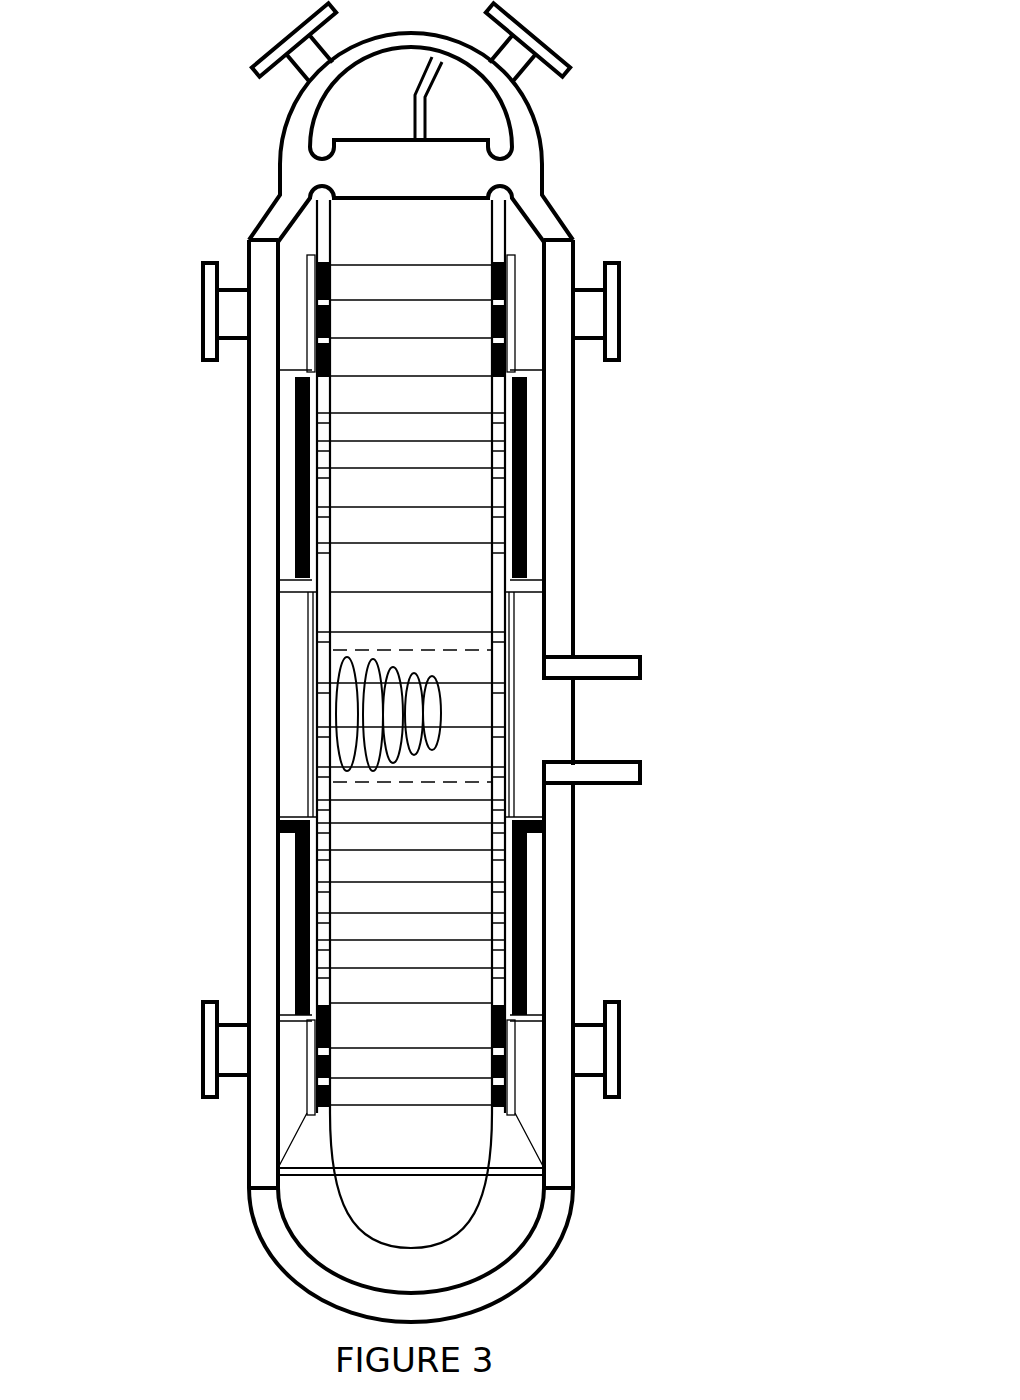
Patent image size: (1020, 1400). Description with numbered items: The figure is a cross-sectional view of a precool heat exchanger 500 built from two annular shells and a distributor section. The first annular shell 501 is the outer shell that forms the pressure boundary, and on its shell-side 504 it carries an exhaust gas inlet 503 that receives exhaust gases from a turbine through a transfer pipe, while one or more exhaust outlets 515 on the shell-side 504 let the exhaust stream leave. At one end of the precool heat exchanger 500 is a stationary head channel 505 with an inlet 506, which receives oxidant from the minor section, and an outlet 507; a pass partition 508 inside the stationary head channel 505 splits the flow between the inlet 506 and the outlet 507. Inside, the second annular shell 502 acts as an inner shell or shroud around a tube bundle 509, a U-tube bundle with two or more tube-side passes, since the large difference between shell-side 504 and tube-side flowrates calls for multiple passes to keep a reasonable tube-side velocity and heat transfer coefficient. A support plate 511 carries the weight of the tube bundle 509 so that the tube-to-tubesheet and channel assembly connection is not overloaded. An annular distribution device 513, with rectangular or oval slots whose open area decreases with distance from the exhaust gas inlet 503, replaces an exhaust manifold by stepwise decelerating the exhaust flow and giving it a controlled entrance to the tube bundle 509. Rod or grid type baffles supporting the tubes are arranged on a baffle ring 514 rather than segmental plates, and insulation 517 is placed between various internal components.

The precool heat exchanger 500 is at (161, 219).
The first annular shell 501 is at (272, 1113).
The second annular shell 502 is at (255, 1190).
The exhaust gas inlet 503 is at (613, 725).
The shell-side 504 is at (586, 615).
The stationary head channel 505 is at (282, 162).
The inlet 506 is at (288, 42).
The outlet 507 is at (533, 30).
The pass partition 508 is at (427, 105).
The tube bundle 509 is at (433, 1065).
The support plate 511 is at (528, 1174).
The annular distribution device 513 is at (295, 694).
The baffle ring 514 is at (313, 594).
The exhaust outlets 515 is at (207, 336).
The insulation 517 is at (315, 280).